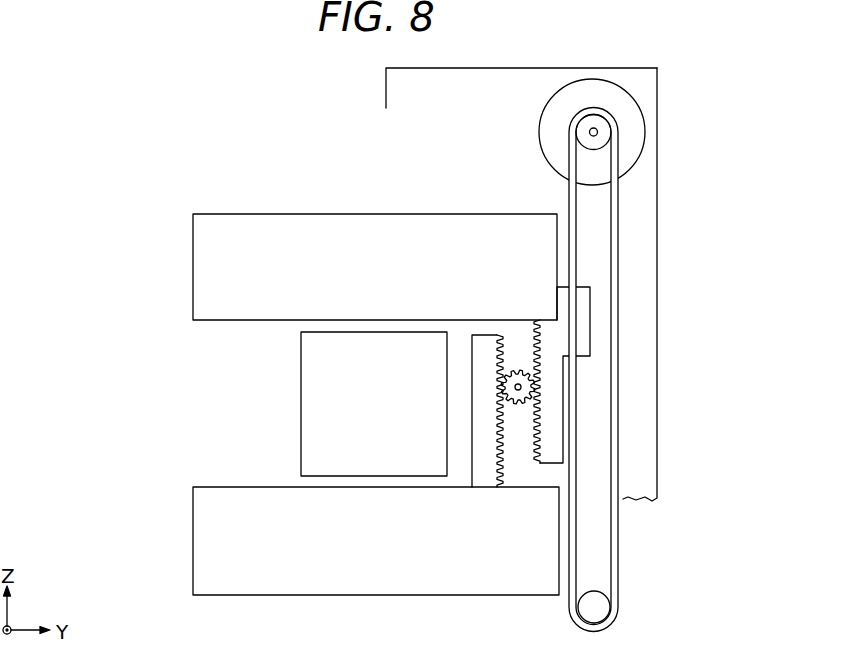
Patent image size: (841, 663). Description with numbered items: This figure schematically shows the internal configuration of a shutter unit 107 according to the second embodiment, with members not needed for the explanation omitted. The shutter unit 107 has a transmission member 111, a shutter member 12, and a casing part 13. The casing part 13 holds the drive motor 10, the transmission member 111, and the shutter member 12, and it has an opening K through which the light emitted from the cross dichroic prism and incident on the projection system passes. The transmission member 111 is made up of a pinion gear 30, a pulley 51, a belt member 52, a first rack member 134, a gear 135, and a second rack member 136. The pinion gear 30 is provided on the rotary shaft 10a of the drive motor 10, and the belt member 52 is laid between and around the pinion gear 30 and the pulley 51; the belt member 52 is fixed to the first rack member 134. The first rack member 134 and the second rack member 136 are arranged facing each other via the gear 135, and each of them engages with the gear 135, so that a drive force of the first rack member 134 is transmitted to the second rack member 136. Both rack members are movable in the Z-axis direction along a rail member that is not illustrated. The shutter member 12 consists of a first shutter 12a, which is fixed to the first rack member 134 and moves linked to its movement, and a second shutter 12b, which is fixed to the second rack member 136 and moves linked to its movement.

The shutter unit 107 is at (738, 138).
The transmission member 111 is at (656, 151).
The casing part 13 is at (413, 97).
The drive motor 10 is at (552, 152).
The rotary shaft 10a is at (592, 128).
The pinion gear 30 is at (600, 122).
The belt member 52 is at (615, 220).
The pulley 51 is at (594, 607).
The shutter member 12 is at (307, 404).
The first shutter 12a is at (202, 266).
The second shutter 12b is at (205, 540).
The opening K is at (317, 395).
The first rack member 134 is at (552, 387).
The gear 135 is at (520, 393).
The second rack member 136 is at (490, 443).